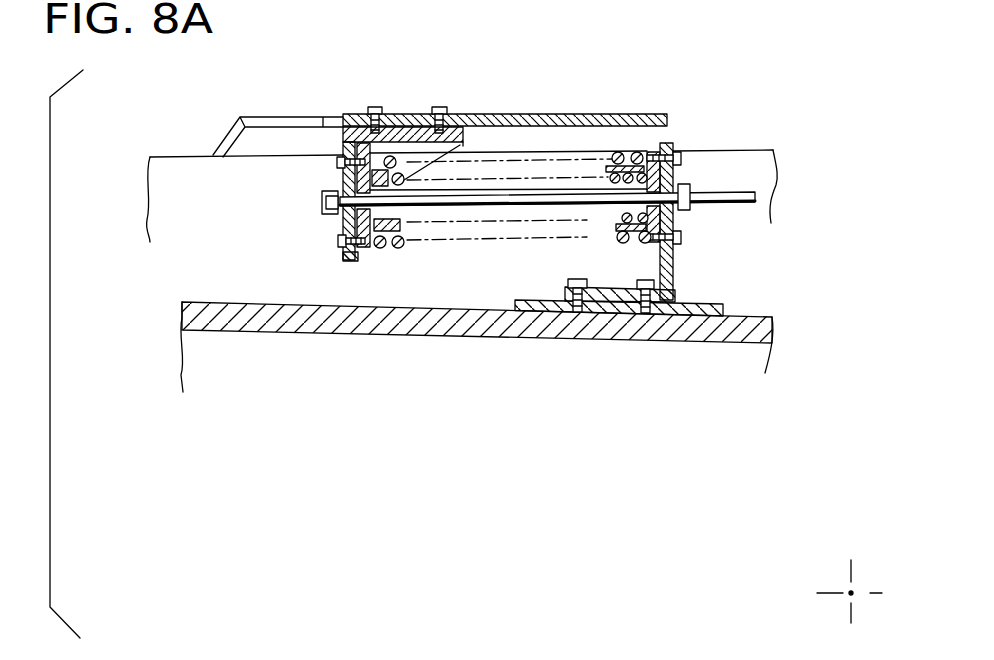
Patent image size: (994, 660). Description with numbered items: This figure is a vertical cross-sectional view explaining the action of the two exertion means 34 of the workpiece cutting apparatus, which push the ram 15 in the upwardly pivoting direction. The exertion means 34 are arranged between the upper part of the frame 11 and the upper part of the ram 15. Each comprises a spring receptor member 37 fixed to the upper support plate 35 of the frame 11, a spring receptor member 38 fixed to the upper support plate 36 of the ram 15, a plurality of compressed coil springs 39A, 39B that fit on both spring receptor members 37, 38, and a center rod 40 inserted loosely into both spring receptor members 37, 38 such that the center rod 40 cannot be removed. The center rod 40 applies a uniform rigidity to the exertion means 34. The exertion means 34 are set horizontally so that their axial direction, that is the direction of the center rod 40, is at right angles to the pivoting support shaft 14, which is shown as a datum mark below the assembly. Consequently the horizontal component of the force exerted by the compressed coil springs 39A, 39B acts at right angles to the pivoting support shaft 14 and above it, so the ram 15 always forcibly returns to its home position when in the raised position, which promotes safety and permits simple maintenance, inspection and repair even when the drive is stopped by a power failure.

The frame 11 is at (748, 148).
The pivoting support shaft 14 is at (850, 593).
The ram 15 is at (764, 312).
The exertion means 34 is at (589, 148).
The upper support plate of the frame 35 is at (510, 114).
The upper support plate of the ram 36 is at (553, 300).
The spring receptor member 37 is at (341, 164).
The spring receptor member 38 is at (675, 274).
The compressed coil spring 39A is at (400, 248).
The compressed coil spring 39B is at (623, 218).
The center rod 40 is at (748, 191).